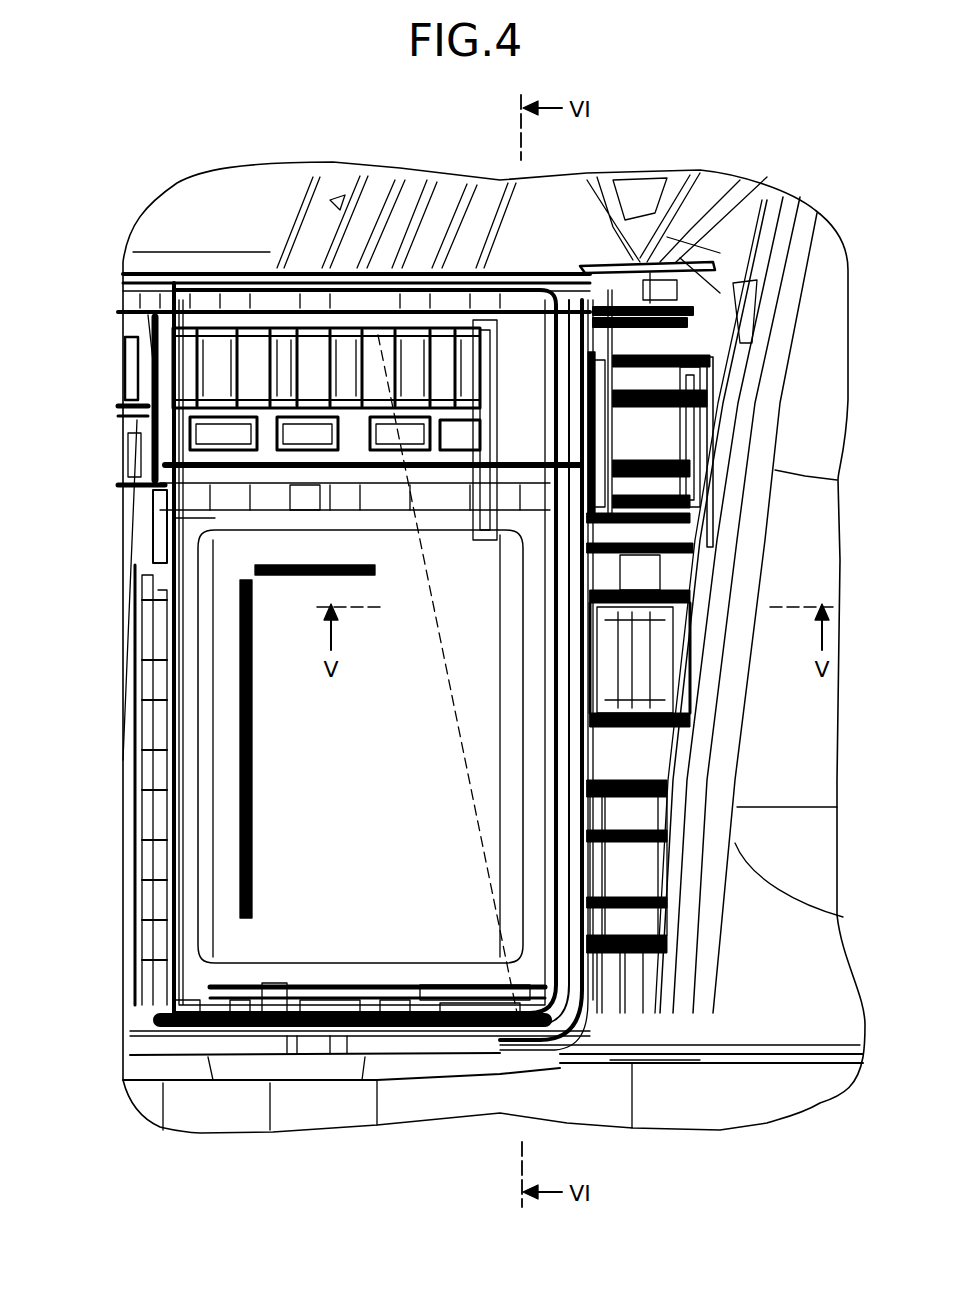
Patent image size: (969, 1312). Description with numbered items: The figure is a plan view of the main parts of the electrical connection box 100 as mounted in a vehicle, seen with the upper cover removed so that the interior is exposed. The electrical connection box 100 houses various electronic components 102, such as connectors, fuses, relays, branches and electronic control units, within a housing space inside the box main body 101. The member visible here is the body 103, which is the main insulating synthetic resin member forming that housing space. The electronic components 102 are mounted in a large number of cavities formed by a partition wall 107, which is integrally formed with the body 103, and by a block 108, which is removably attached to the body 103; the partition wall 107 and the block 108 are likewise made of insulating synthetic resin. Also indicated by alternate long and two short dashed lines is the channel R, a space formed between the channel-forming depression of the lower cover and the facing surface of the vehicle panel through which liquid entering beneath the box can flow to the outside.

The electrical connection box 100 is at (183, 244).
The box main body 101 is at (212, 270).
The electronic components 102 is at (340, 555).
The body 103 is at (442, 270).
The partition wall 107 is at (190, 516).
The block 108 is at (470, 320).
The channel R is at (468, 778).